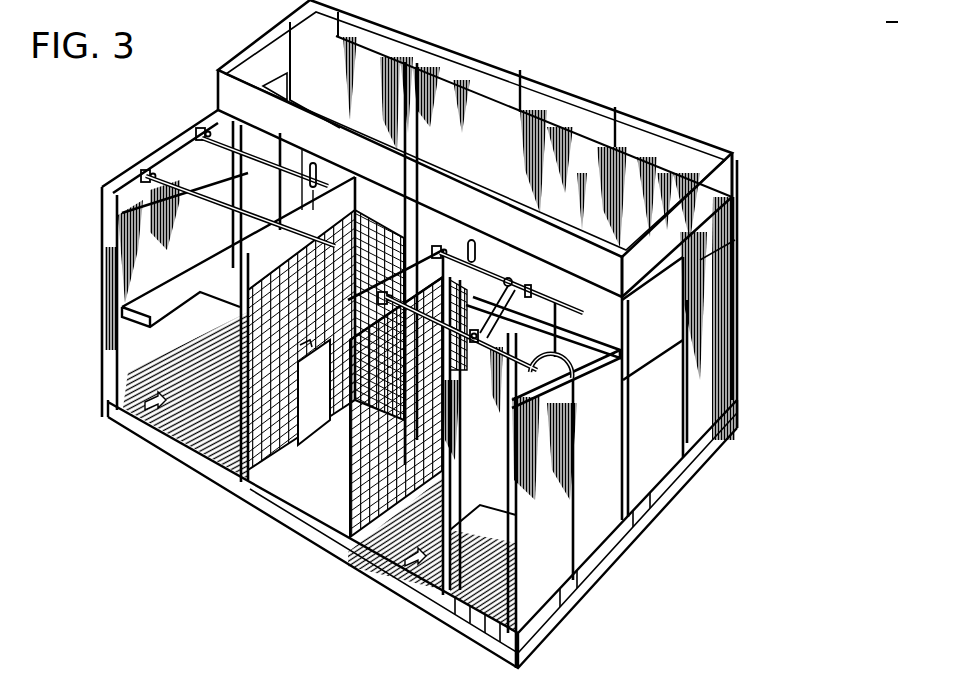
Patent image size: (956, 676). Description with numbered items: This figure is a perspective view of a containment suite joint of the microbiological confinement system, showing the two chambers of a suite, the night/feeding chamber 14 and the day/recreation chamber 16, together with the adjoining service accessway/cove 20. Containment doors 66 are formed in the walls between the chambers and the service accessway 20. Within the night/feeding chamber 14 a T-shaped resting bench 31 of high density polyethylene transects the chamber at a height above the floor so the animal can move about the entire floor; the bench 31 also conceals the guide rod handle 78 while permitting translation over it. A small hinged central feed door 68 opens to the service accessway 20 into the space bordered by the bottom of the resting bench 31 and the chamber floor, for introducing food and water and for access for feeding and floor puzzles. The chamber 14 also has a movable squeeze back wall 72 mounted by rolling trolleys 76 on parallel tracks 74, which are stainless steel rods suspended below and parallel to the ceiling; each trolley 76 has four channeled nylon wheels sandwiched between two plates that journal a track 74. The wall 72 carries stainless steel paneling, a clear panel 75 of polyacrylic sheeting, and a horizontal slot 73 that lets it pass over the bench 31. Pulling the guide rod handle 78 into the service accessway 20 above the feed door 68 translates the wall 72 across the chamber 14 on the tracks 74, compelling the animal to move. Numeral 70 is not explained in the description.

The night/feeding chamber 14 is at (243, 142).
The day/recreation chamber 16 is at (547, 116).
The service accessway/cove 20 is at (325, 517).
The T-shaped resting bench 31 is at (140, 312).
The containment door 66 is at (376, 214).
The central feed door 68 is at (343, 473).
The floor grating 70 is at (108, 420).
The squeeze back wall 72 is at (196, 132).
The horizontal slot 73 is at (463, 480).
The track 74 is at (146, 170).
The clear panel 75 is at (397, 548).
The rolling trolley 76 is at (545, 285).
The guide rod handle 78 is at (293, 460).